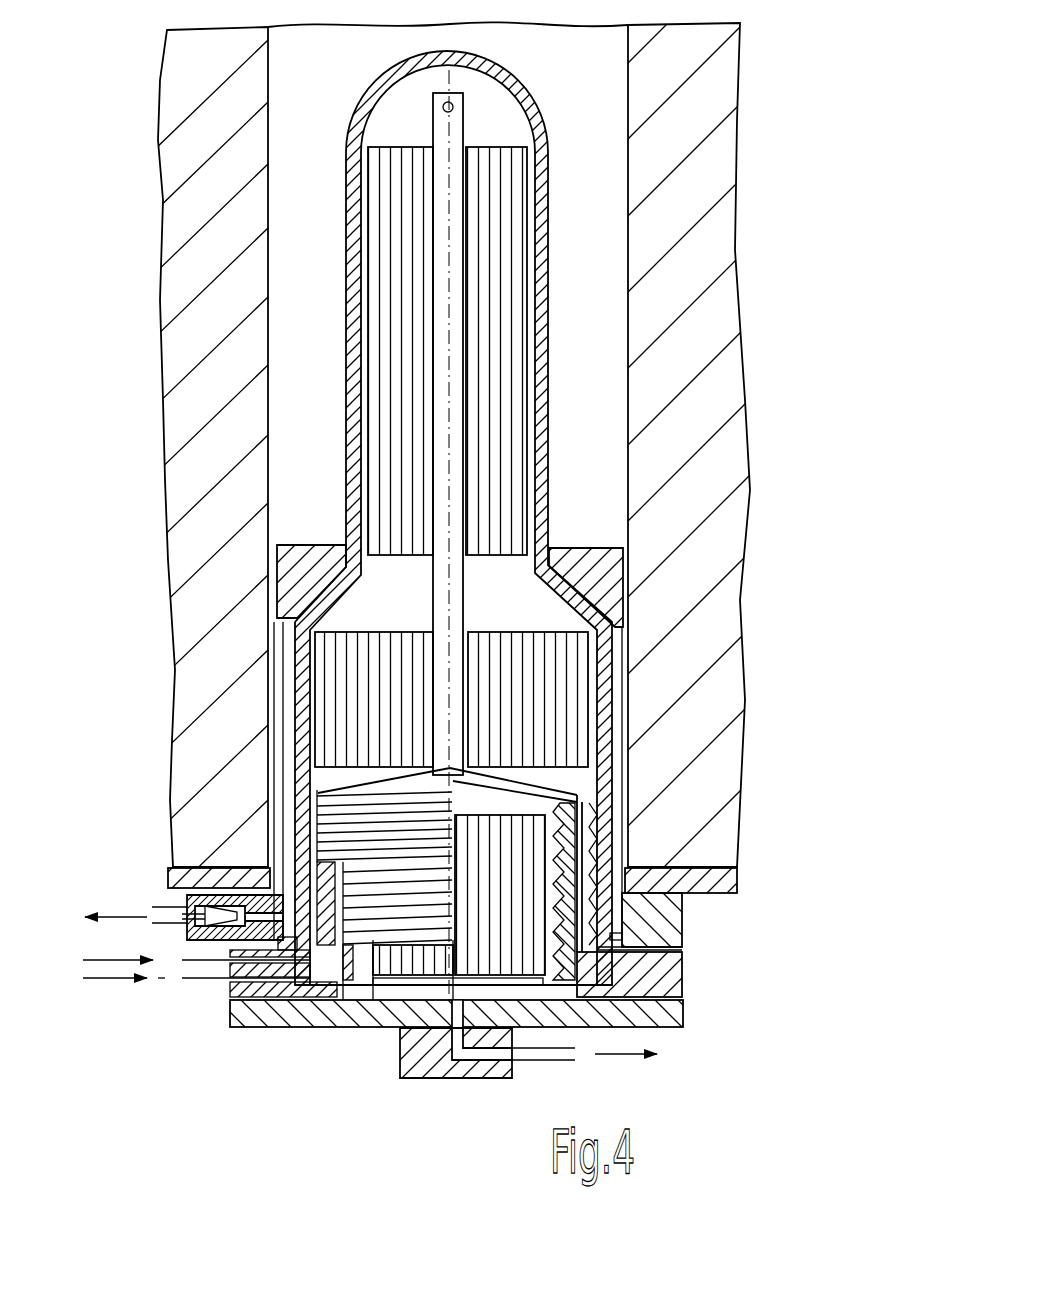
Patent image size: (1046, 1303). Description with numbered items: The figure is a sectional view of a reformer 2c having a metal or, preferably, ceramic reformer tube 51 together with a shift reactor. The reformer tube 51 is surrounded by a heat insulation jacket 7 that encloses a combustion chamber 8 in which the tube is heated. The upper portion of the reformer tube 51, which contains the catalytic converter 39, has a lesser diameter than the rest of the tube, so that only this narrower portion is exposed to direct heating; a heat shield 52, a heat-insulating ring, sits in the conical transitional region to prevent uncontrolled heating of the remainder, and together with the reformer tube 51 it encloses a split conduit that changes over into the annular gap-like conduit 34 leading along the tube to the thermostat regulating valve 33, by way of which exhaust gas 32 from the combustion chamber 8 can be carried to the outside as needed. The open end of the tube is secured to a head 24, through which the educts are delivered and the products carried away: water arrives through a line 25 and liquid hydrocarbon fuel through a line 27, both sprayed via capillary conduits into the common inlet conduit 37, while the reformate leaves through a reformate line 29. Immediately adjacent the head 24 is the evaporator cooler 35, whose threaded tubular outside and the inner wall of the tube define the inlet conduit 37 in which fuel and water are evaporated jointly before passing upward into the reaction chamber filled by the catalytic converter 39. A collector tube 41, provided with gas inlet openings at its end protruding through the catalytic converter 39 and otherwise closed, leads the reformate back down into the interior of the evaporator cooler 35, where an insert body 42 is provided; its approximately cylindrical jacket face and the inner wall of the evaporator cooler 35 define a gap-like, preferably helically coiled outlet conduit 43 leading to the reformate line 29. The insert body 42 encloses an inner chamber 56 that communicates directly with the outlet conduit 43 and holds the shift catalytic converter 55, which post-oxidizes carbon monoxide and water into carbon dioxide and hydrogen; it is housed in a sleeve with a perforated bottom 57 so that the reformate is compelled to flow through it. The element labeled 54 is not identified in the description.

The reformer 2c is at (777, 196).
The heat insulation jacket 7 is at (652, 420).
The combustion chamber 8 is at (603, 326).
The head 24 is at (375, 1086).
The line 25 is at (197, 980).
The line 27 is at (177, 970).
The reformate line 29 is at (472, 1063).
The exhaust gas 32 is at (160, 907).
The regulating valve 33 is at (160, 929).
The annular gap-like conduit 34 is at (613, 670).
The evaporator cooler 35 is at (540, 788).
The inlet conduit 37 is at (498, 853).
The catalytic converter 39 is at (500, 275).
The collector tube 41 is at (465, 130).
The insert body 42 is at (586, 784).
The outlet conduit 43 is at (343, 985).
The reformer tube 51 is at (552, 426).
The heat shield 52 is at (603, 568).
The coil 54 is at (560, 718).
The shift catalytic converter 55 is at (588, 858).
The inner chamber 56 is at (399, 891).
The perforated bottom 57 is at (408, 980).